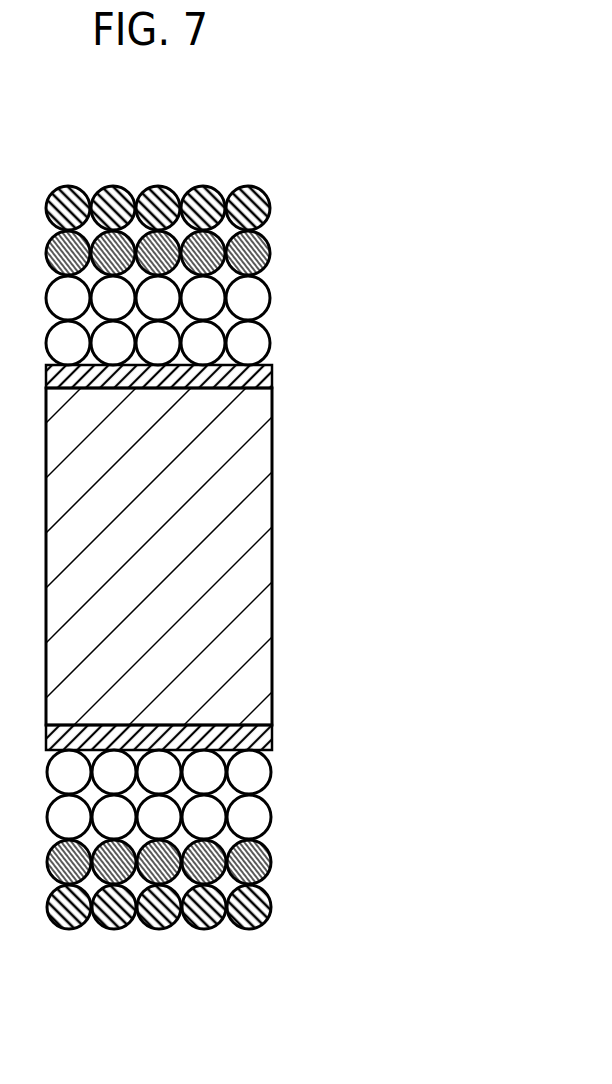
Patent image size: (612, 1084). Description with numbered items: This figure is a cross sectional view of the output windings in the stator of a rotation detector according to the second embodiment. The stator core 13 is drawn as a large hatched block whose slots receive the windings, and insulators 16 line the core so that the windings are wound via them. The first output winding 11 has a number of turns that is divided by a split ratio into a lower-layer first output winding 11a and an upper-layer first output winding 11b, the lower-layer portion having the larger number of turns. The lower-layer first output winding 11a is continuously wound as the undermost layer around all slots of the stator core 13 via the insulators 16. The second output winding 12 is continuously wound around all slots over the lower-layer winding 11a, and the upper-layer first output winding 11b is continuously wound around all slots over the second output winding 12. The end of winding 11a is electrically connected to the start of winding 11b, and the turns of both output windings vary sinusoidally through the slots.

The output winding 11 is at (261, 551).
The lower-layer first output winding 11a is at (214, 557).
The upper-layer first output winding 11b is at (282, 208).
The output winding 12 is at (282, 252).
The stator core 13 is at (283, 558).
The insulator 16 is at (283, 378).